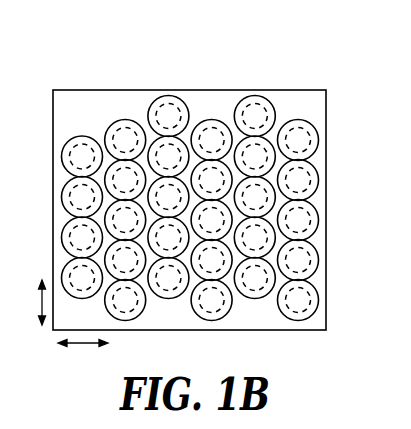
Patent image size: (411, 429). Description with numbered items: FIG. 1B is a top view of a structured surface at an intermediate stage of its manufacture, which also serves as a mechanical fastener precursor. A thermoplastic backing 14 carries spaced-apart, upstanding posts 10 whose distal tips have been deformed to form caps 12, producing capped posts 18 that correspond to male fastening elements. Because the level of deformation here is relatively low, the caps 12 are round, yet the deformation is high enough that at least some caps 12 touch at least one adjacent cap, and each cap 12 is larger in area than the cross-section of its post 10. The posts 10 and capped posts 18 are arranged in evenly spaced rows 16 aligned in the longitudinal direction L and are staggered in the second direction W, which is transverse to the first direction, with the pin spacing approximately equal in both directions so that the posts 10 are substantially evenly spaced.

The upstanding posts 10 is at (71, 237).
The caps 12 is at (316, 229).
The thermoplastic backing 14 is at (318, 163).
The rows 16 is at (296, 121).
The capped posts 18 is at (316, 302).
The longitudinal direction L is at (40, 303).
The second direction W is at (81, 345).